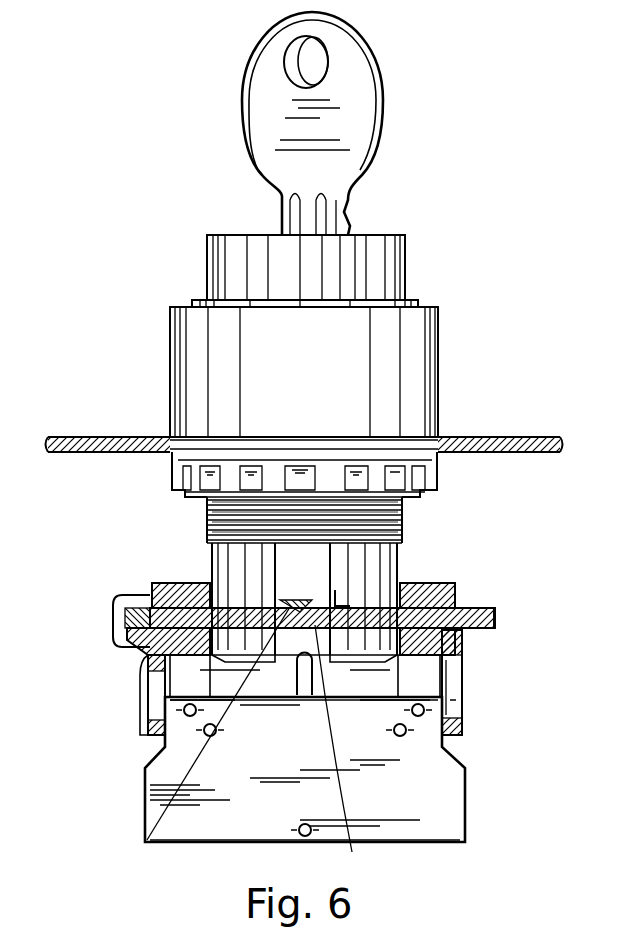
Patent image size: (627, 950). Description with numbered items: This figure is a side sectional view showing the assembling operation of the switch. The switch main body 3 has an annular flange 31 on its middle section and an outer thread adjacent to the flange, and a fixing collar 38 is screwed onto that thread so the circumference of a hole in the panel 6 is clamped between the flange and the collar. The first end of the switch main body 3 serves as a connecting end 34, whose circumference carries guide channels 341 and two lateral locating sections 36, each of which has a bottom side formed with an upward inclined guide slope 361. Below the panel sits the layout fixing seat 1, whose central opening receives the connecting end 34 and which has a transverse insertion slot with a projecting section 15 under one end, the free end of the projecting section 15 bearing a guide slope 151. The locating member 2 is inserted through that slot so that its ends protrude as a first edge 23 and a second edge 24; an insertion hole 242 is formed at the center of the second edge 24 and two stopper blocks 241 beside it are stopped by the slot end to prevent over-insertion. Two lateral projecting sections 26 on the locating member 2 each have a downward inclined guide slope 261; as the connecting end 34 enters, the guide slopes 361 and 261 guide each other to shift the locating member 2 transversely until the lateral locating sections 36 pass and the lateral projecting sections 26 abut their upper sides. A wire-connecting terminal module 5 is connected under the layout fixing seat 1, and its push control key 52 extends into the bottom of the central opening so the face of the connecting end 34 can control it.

The layout fixing seat 1 is at (462, 638).
The locating member 2 is at (462, 630).
The switch main body 3 is at (160, 412).
The wire-connecting terminal module 5 is at (150, 788).
The panel 6 is at (490, 437).
The projecting section 15 is at (135, 655).
The first edge 23 is at (505, 618).
The second edge 24 is at (112, 618).
The lateral projecting section 26 is at (147, 840).
The annular flange 31 is at (186, 366).
The connecting end 34 is at (442, 588).
The lateral locating section 36 is at (300, 605).
The fixing collar 38 is at (172, 470).
The push control key 52 is at (303, 680).
The guide slope 151 is at (122, 654).
The stopper block 241 is at (122, 597).
The insertion hole 242 is at (123, 637).
The guide slope 261 is at (352, 852).
The guide channel 341 is at (368, 598).
The guide slope 361 is at (276, 598).